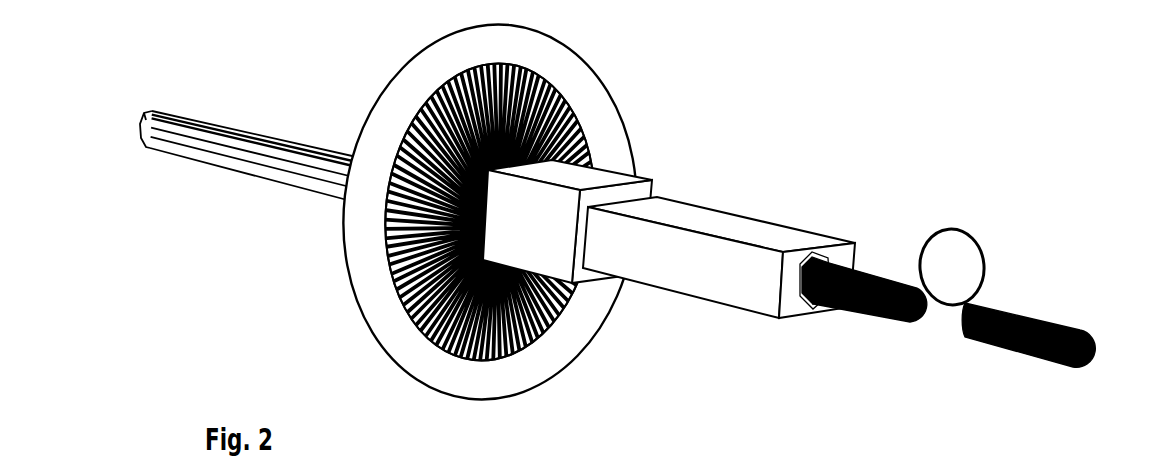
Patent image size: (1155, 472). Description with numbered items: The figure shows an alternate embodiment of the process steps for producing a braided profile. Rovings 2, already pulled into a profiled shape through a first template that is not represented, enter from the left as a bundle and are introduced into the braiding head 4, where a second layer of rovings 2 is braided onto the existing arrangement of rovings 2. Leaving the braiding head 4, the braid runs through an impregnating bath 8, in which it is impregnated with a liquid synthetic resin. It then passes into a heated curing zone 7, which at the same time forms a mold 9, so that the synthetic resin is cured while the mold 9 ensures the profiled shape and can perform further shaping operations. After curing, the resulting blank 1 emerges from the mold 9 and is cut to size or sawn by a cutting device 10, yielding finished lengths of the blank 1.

The blank 1 is at (855, 265).
The rovings 2 is at (216, 132).
The braiding head 4 is at (598, 110).
The heated curing zone 7 is at (719, 206).
The impregnating bath 8 is at (568, 178).
The mold 9 is at (700, 215).
The cutting device 10 is at (958, 230).